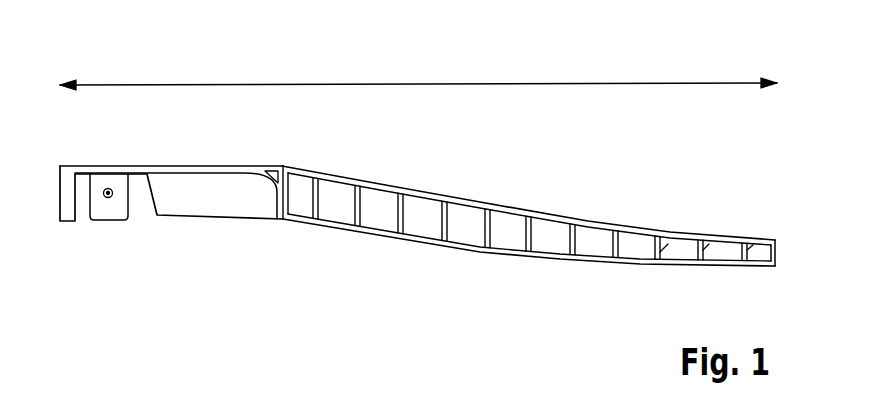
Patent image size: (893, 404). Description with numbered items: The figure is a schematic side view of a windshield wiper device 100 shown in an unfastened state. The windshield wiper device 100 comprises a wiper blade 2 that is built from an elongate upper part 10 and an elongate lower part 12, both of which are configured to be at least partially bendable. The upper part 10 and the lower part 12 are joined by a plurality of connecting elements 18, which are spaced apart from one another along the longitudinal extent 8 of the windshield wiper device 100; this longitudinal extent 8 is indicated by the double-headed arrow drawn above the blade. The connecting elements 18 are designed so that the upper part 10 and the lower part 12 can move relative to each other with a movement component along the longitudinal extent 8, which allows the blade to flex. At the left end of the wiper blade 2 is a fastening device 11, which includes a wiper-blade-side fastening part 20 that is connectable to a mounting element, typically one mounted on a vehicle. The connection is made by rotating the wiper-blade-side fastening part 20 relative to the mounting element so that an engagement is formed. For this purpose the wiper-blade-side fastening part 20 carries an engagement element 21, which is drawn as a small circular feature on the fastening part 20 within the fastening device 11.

The windshield wiper device 100 is at (98, 35).
The longitudinal extent 8 is at (431, 83).
The fastening device 11 is at (210, 183).
The wiper-blade-side fastening part 20 is at (95, 212).
The engagement element 21 is at (110, 198).
The wiper blade 2 is at (369, 273).
The upper part 10 is at (588, 222).
The lower part 12 is at (475, 251).
The connecting elements 18 is at (659, 252).